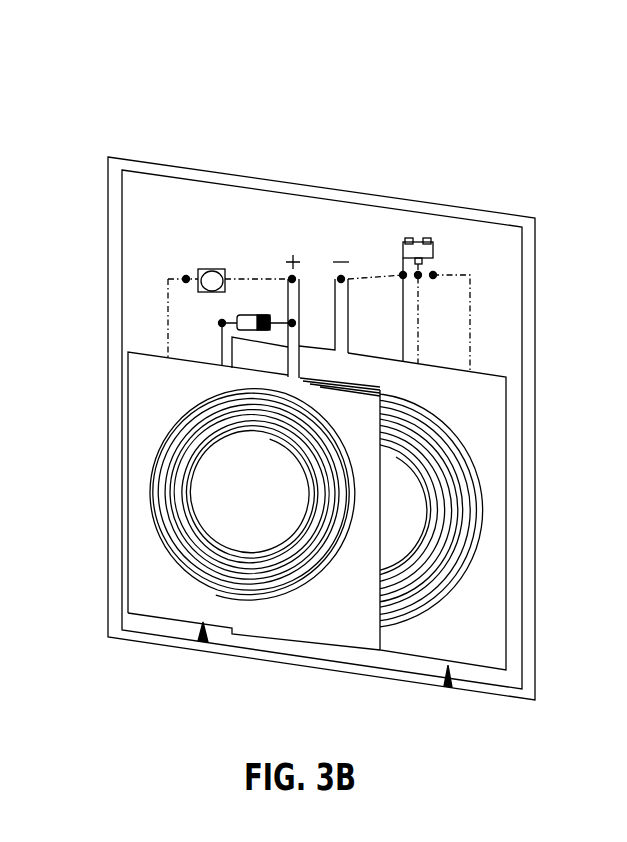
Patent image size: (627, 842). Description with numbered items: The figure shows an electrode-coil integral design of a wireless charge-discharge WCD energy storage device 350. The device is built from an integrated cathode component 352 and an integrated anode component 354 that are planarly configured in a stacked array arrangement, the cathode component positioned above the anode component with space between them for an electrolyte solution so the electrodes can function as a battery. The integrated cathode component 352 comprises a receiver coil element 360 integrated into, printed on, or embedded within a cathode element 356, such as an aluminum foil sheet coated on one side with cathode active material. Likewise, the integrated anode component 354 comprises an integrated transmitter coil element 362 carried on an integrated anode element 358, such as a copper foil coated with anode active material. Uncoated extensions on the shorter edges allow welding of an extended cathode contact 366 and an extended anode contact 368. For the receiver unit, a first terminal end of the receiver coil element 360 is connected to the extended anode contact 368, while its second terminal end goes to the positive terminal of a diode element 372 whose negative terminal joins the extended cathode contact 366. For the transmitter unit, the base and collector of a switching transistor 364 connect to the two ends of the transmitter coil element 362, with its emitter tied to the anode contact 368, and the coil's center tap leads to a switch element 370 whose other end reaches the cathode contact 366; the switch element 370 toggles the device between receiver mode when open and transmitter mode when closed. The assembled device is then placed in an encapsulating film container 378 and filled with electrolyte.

The WCD energy storage device 350 is at (400, 185).
The integrated cathode component 352 is at (200, 645).
The integrated anode component 354 is at (448, 688).
The cathode element 356 is at (150, 602).
The integrated anode element 358 is at (480, 630).
The receiver coil element 360 is at (303, 597).
The integrated transmitter coil element 362 is at (475, 470).
The switching transistor 364 is at (420, 242).
The extended cathode contact 366 is at (299, 300).
The extended anode contact 368 is at (345, 300).
The switch element 370 is at (207, 268).
The diode element 372 is at (237, 318).
The encapsulating film container 378 is at (535, 357).